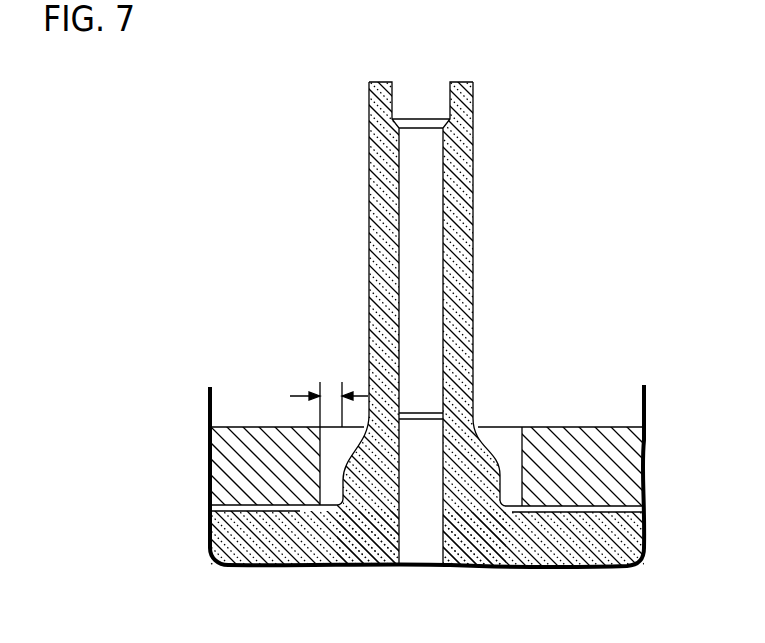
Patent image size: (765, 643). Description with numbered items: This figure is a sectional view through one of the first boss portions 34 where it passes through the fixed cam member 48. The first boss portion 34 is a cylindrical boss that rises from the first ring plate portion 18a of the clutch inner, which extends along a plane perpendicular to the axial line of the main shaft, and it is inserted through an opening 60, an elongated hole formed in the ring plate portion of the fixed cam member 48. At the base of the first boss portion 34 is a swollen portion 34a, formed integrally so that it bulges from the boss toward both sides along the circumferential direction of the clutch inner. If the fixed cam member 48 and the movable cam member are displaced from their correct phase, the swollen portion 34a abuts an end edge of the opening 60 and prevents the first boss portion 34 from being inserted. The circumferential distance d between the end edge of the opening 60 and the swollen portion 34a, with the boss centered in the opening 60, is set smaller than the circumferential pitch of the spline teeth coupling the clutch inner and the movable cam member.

The first boss portion 34 is at (455, 208).
The swollen portion 34a is at (345, 475).
The fixed cam member 48 is at (243, 422).
The opening 60 is at (511, 467).
The first ring plate portion 18a is at (567, 518).
The distance d is at (331, 395).